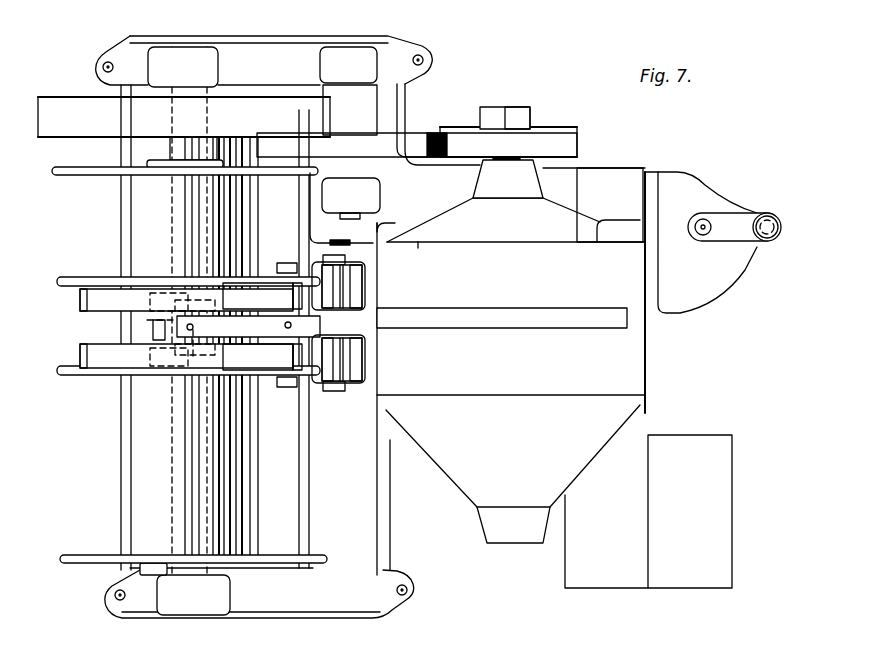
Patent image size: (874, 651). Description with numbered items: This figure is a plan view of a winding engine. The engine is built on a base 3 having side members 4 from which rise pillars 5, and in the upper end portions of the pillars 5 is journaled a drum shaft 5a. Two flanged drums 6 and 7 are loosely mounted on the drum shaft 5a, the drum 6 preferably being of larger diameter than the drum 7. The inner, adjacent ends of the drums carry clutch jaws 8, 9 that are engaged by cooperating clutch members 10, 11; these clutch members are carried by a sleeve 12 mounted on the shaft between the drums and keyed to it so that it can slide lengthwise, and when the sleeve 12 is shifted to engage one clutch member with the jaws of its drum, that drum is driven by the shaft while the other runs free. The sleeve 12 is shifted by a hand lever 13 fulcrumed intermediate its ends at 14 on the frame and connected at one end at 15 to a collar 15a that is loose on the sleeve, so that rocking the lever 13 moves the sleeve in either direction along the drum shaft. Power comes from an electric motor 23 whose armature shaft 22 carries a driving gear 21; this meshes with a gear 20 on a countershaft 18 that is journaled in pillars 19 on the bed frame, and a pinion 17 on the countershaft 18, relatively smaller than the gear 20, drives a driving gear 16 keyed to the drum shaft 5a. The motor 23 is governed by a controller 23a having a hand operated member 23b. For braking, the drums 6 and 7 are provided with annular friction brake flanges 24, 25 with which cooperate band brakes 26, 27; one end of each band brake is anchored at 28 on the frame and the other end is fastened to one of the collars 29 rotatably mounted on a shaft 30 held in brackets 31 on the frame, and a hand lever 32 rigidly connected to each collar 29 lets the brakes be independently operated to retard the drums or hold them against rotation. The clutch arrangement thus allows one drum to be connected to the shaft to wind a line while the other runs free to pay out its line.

The base 3 is at (570, 183).
The side members 4 is at (257, 38).
The pillars 5 is at (203, 52).
The drum shaft 5a is at (190, 527).
The flanged drum 6 is at (140, 453).
The flanged drum 7 is at (140, 233).
The clutch jaws 8 is at (173, 367).
The clutch jaws 9 is at (163, 285).
The clutch member 10 is at (157, 352).
The clutch member 11 is at (150, 303).
The sleeve 12 is at (153, 315).
The hand lever 13 is at (462, 303).
The fulcrum 14 is at (284, 325).
The connection 15 is at (193, 338).
The collar 15a is at (147, 320).
The driving gear 16 is at (73, 110).
The pinion 17 is at (373, 110).
The countershaft 18 is at (380, 222).
The pillars 19 is at (345, 146).
The gear 20 is at (428, 137).
The driving gear 21 is at (547, 127).
The armature shaft 22 is at (507, 160).
The electric motor 23 is at (625, 363).
The controller 23a is at (723, 281).
The hand operated member 23b is at (797, 199).
The annular friction brake flange 24 is at (93, 343).
The annular friction brake flange 25 is at (77, 300).
The band brake 26 is at (73, 371).
The band brake 27 is at (60, 283).
The anchor 28 is at (293, 390).
The collars 29 is at (362, 292).
The shaft 30 is at (362, 355).
The brackets 31 is at (323, 253).
The hand lever 32 is at (362, 272).